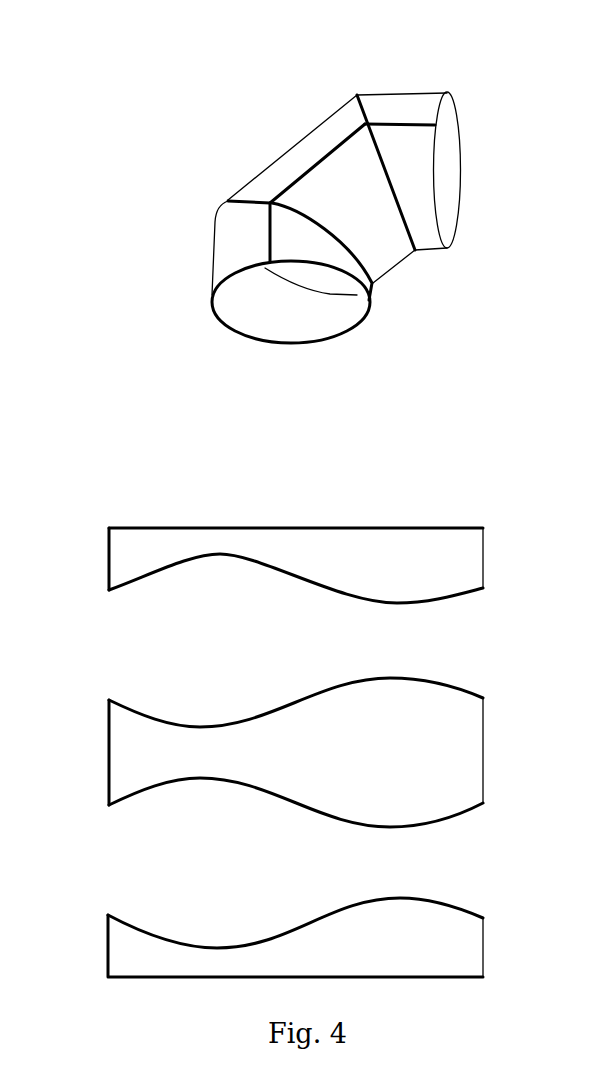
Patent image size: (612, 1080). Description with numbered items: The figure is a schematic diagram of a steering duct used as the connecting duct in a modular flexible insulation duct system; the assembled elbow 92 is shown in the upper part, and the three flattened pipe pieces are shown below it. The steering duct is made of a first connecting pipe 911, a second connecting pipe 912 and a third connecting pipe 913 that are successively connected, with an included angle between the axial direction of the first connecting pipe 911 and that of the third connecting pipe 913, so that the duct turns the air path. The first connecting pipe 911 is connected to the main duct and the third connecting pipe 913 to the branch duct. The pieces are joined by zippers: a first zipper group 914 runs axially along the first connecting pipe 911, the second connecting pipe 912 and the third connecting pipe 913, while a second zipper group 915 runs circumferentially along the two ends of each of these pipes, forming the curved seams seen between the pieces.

The elbow pipe section 92 is at (390, 107).
The first connecting pipe 911 is at (407, 550).
The second connecting pipe 912 is at (458, 723).
The third connecting pipe 913 is at (443, 943).
The first zipper group 914 is at (328, 155).
The second zipper group 915 is at (462, 153).